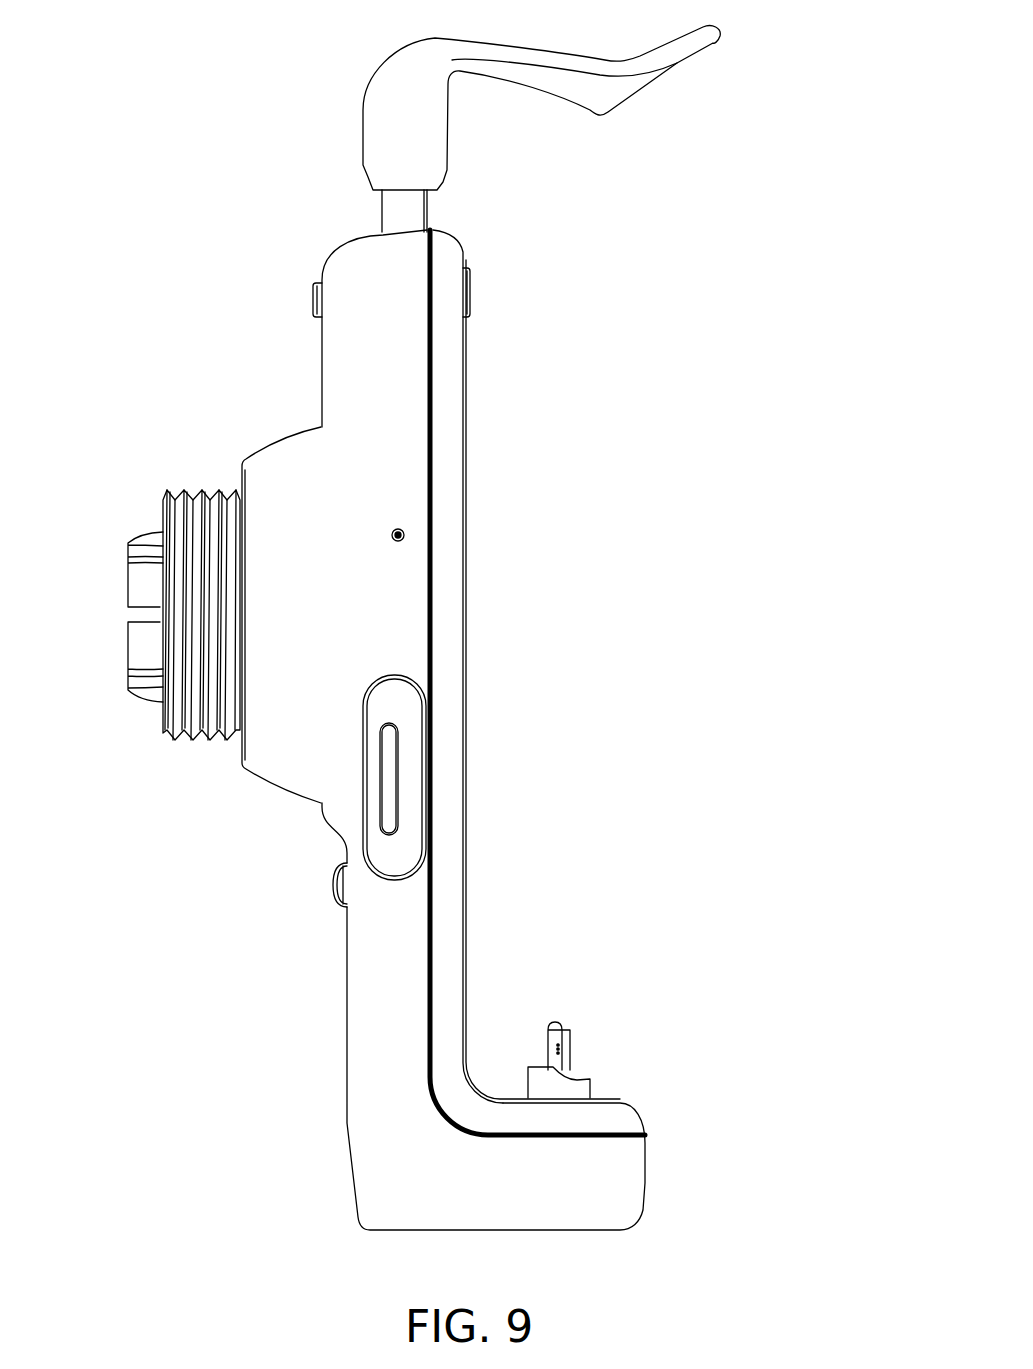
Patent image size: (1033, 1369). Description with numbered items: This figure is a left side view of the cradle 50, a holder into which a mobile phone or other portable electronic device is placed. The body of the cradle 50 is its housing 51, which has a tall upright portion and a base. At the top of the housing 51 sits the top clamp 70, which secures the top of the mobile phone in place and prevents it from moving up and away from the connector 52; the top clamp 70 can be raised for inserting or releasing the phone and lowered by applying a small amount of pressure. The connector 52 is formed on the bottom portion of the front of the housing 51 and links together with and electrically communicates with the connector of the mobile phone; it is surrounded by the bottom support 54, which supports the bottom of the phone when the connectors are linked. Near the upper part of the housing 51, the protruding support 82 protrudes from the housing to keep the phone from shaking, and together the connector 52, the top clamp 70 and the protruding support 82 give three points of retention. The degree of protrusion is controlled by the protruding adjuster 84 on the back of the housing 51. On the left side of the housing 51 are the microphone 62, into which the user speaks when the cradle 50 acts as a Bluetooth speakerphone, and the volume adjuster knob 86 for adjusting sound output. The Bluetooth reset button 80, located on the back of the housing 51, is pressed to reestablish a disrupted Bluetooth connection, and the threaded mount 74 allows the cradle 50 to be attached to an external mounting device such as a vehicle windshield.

The cradle 50 is at (177, 130).
The housing 51 is at (447, 482).
The connector 52 is at (570, 1042).
The bottom support 54 is at (580, 1088).
The microphone 62 is at (404, 535).
The top clamp 70 is at (617, 83).
The threaded mount 74 is at (203, 733).
The Bluetooth reset button 80 is at (333, 892).
The protruding support 82 is at (470, 295).
The protruding adjuster 84 is at (313, 302).
The volume adjuster knob 86 is at (390, 762).